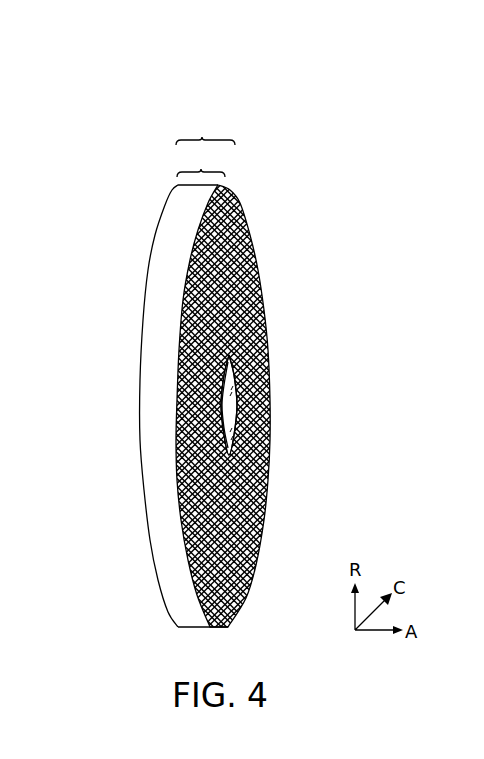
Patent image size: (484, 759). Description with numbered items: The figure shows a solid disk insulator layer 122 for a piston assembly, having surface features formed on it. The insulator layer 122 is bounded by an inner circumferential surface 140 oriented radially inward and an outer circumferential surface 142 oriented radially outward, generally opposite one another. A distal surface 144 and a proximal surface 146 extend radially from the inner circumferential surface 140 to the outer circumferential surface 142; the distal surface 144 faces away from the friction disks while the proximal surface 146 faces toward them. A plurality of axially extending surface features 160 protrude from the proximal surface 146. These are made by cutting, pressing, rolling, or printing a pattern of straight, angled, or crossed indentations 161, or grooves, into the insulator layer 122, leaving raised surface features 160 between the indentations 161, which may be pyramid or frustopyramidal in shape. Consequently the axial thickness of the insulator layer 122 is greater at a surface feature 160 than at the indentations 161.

The insulator layer 122 is at (194, 361).
The inner circumferential surface 140 is at (237, 420).
The outer circumferential surface 142 is at (158, 296).
The distal surface 144 is at (159, 406).
The proximal surface 146 is at (239, 406).
The surface features 160 is at (239, 406).
The indentations 161 is at (252, 245).